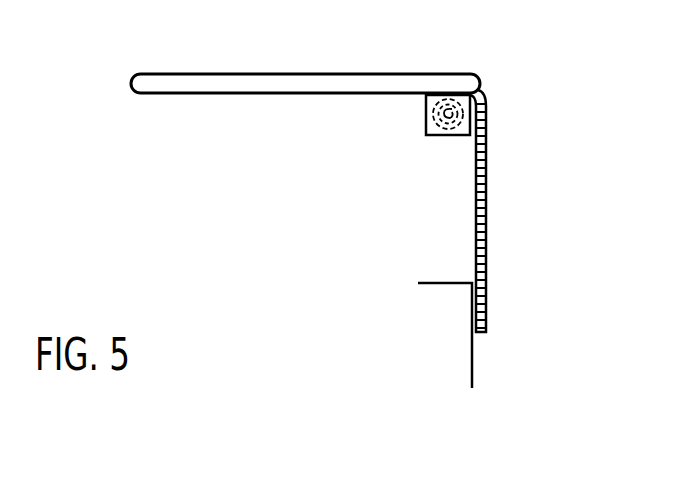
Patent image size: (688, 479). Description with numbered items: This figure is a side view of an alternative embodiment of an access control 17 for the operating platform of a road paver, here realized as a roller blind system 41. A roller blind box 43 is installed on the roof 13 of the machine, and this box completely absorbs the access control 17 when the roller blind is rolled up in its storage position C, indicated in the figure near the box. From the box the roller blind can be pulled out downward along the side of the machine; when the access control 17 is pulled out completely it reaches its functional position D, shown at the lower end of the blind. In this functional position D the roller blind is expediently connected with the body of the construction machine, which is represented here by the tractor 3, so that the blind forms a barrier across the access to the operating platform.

The roof 13 is at (364, 73).
The roller blind box 43 is at (425, 116).
The storage position C is at (443, 137).
The roller blind system 41 is at (531, 125).
The access control 17 is at (488, 212).
The tractor 3 is at (450, 335).
The functional position D is at (493, 337).